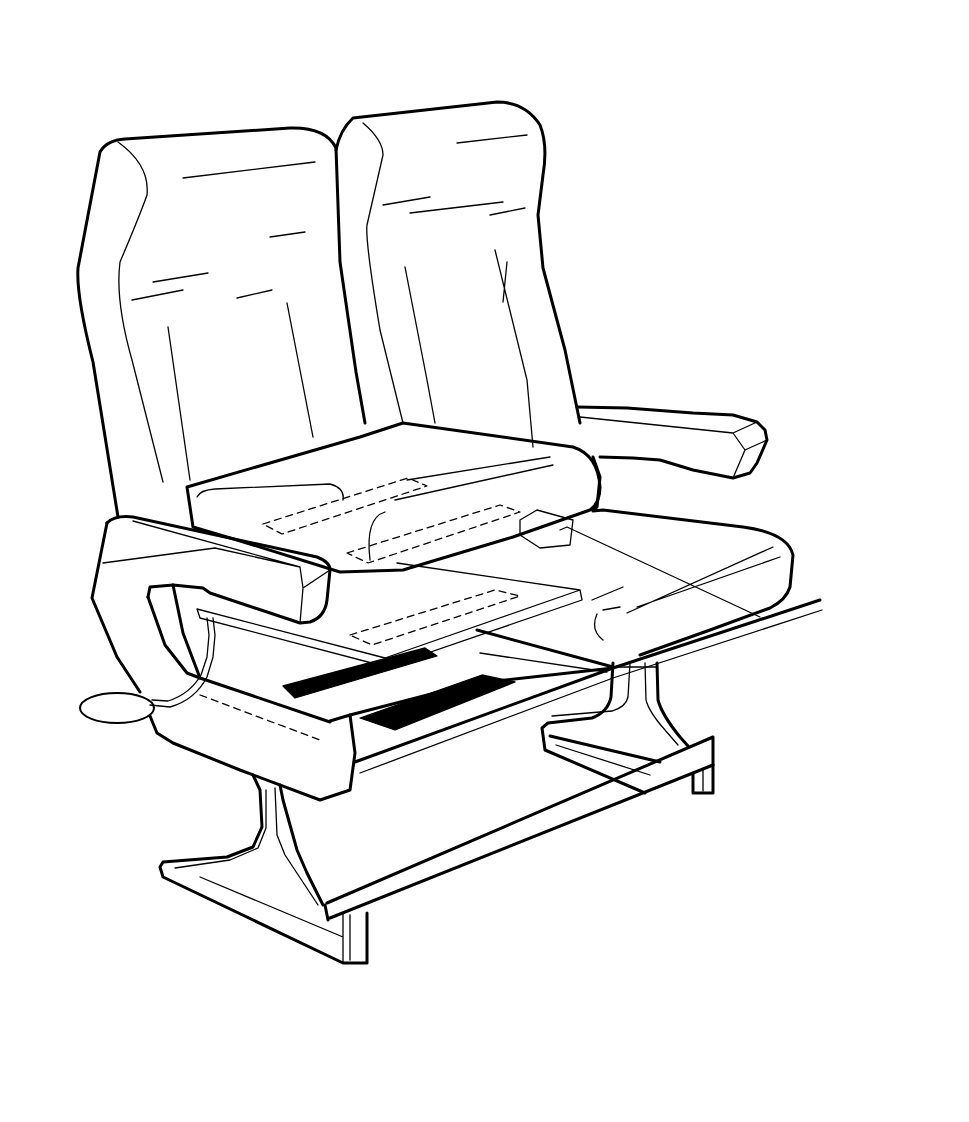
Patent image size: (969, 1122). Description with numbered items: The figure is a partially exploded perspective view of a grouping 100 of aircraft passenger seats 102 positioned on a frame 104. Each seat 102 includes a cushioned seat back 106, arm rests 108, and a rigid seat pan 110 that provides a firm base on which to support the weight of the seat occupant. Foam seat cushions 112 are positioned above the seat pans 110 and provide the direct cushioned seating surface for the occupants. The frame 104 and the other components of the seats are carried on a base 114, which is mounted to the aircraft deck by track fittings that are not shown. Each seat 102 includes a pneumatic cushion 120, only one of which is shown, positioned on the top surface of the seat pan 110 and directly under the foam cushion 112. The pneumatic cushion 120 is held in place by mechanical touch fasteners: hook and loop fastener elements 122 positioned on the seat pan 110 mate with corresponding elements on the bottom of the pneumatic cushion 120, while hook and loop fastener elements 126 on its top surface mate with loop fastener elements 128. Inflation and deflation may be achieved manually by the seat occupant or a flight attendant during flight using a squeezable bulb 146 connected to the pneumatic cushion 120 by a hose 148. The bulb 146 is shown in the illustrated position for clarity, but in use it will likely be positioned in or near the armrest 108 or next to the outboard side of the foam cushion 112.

The grouping 100 is at (655, 178).
The aircraft passenger seat 102 is at (153, 120).
The frame 104 is at (103, 623).
The cushioned seat back 106 is at (517, 243).
The arm rest 108 is at (120, 540).
The rigid seat pan 110 is at (407, 750).
The foam seat cushion 112 is at (233, 483).
The base 114 is at (267, 815).
The pneumatic cushion 120 is at (330, 707).
The hook and loop fastener element 122 is at (280, 690).
The hook and loop fastener element 126 is at (150, 563).
The loop fastener element 128 is at (175, 512).
The squeezable bulb 146 is at (112, 713).
The hose 148 is at (203, 633).